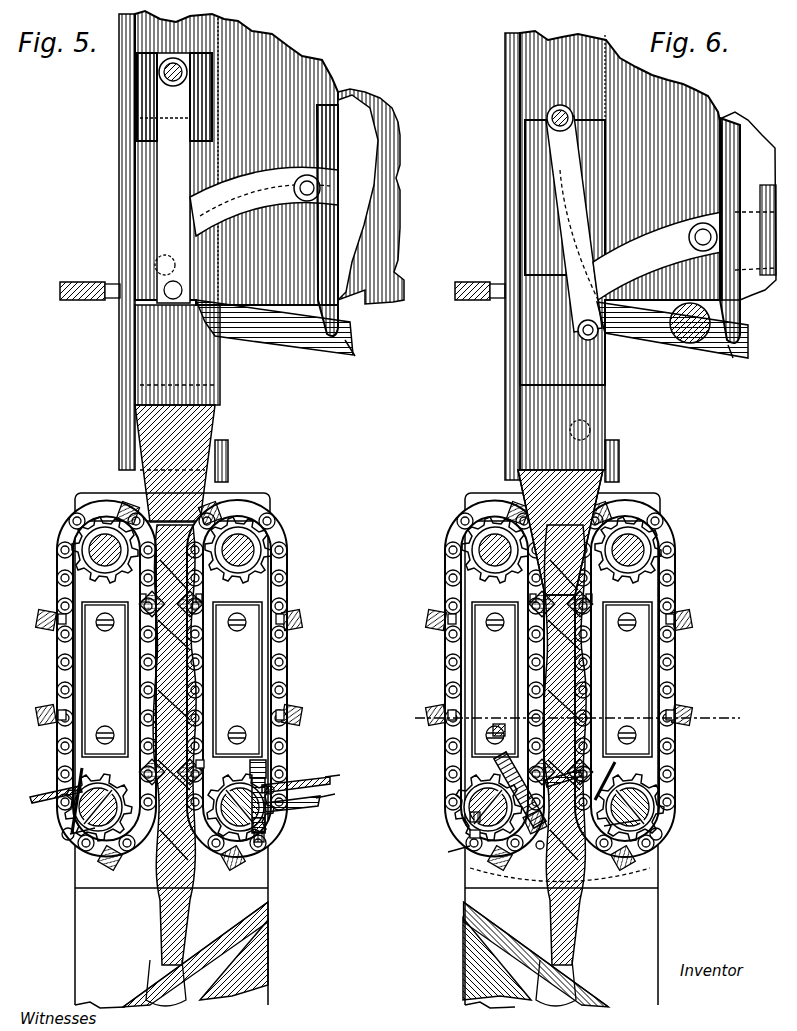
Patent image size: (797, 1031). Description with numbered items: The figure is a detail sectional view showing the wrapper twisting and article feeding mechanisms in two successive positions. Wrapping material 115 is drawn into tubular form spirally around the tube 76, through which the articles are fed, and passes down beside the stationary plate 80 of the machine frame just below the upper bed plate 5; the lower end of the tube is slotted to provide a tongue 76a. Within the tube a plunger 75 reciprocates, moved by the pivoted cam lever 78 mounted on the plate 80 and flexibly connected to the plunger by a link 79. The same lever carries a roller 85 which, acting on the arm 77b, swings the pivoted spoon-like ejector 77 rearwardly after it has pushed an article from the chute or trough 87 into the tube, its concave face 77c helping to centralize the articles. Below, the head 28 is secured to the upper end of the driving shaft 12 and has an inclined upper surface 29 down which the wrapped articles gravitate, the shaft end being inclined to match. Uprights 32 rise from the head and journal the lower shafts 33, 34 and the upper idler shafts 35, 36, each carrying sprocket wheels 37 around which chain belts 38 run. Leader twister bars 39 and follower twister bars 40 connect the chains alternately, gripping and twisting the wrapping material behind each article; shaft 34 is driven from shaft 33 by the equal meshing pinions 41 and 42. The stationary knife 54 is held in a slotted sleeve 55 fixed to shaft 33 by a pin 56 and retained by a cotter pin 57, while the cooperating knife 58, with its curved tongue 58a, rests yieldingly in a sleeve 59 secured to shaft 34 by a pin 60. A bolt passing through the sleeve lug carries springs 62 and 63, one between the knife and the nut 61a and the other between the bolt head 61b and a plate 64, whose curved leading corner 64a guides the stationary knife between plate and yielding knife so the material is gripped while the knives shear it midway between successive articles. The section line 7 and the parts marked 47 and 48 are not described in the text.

In FIG. 5, the upper bed plate 5 is at (78, 283).
In FIG. 6, the upper bed plate 5 is at (468, 283).
In FIG. 6, the section line 7 is at (575, 718).
In FIG. 5, the driving shaft 12 is at (178, 998).
In FIG. 6, the driving shaft 12 is at (540, 1004).
In FIG. 5, the head 28 is at (268, 962).
In FIG. 6, the head 28 is at (464, 984).
In FIG. 5, the inclined upper surface 29 is at (222, 945).
In FIG. 6, the inclined upper surface 29 is at (507, 955).
In FIG. 5, the uprights 32 is at (78, 495).
In FIG. 6, the uprights 32 is at (648, 496).
In FIG. 5, the shaft 33 is at (128, 848).
In FIG. 6, the shaft 33 is at (664, 812).
In FIG. 5, the shaft 34 is at (214, 848).
In FIG. 6, the shaft 34 is at (466, 808).
In FIG. 5, the shaft 35 is at (92, 542).
In FIG. 6, the shaft 35 is at (640, 550).
In FIG. 5, the shaft 36 is at (252, 542).
In FIG. 6, the shaft 36 is at (480, 550).
In FIG. 5, the sprocket wheels 37 is at (66, 590).
In FIG. 6, the sprocket wheels 37 is at (456, 588).
In FIG. 5, the chain belts 38 is at (55, 660).
In FIG. 6, the chain belts 38 is at (446, 660).
In FIG. 5, the leader twister bars 39 is at (44, 628).
In FIG. 6, the leader twister bars 39 is at (452, 516).
In FIG. 5, the follower twister bars 40 is at (120, 500).
In FIG. 6, the follower twister bars 40 is at (446, 616).
In FIG. 6, the pinion 41 is at (660, 866).
In FIG. 6, the pinion 42 is at (448, 852).
In FIG. 5, the guide plate 47 is at (90, 688).
In FIG. 6, the guide plate 47 is at (476, 682).
In FIG. 5, the screw 48 is at (104, 728).
In FIG. 6, the screw 48 is at (504, 620).
In FIG. 5, the knife 54 is at (40, 800).
In FIG. 6, the knife 54 is at (618, 770).
In FIG. 5, the sleeve 55 is at (66, 840).
In FIG. 6, the sleeve 55 is at (664, 838).
In FIG. 5, the pin 56 is at (80, 834).
In FIG. 6, the pin 56 is at (664, 824).
In FIG. 5, the cotter pin 57 is at (66, 826).
In FIG. 5, the knife 58 is at (300, 806).
In FIG. 6, the knife 58 is at (563, 767).
In FIG. 5, the tongue 58a is at (336, 797).
In FIG. 5, the sleeve 59 is at (204, 768).
In FIG. 6, the sleeve 59 is at (470, 836).
In FIG. 5, the pin 60 is at (262, 844).
In FIG. 6, the pin 60 is at (470, 818).
In FIG. 5, the nut 61a is at (268, 838).
In FIG. 6, the nut 61a is at (498, 720).
In FIG. 5, the head of bolt 61b is at (268, 752).
In FIG. 6, the head of bolt 61b is at (534, 832).
In FIG. 5, the spring 62 is at (268, 822).
In FIG. 6, the spring 62 is at (500, 770).
In FIG. 5, the spring 63 is at (275, 786).
In FIG. 6, the spring 63 is at (540, 850).
In FIG. 5, the plate 64 is at (320, 780).
In FIG. 5, the leading corner 64a is at (338, 777).
In FIG. 5, the plunger 75 is at (135, 418).
In FIG. 6, the plunger 75 is at (518, 482).
In FIG. 5, the tube 76 is at (119, 360).
In FIG. 6, the tube 76 is at (505, 336).
In FIG. 5, the tongue 76a is at (228, 462).
In FIG. 6, the tongue 76a is at (619, 462).
In FIG. 5, the ejector 77 is at (347, 297).
In FIG. 6, the ejector 77 is at (742, 312).
In FIG. 5, the arm 77b is at (380, 127).
In FIG. 6, the arm 77b is at (736, 138).
In FIG. 5, the concave portion 77c is at (353, 333).
In FIG. 6, the concave portion 77c is at (728, 352).
In FIG. 5, the lever 78 is at (372, 208).
In FIG. 6, the lever 78 is at (657, 256).
In FIG. 5, the link 79 is at (165, 108).
In FIG. 6, the link 79 is at (565, 222).
In FIG. 5, the stationary plate 80 is at (326, 95).
In FIG. 6, the stationary plate 80 is at (690, 102).
In FIG. 5, the roller 85 is at (294, 190).
In FIG. 6, the roller 85 is at (690, 242).
In FIG. 5, the chute 87 is at (318, 353).
In FIG. 6, the chute 87 is at (664, 352).
In FIG. 5, the wrapping material 115 is at (130, 432).
In FIG. 6, the wrapping material 115 is at (507, 378).